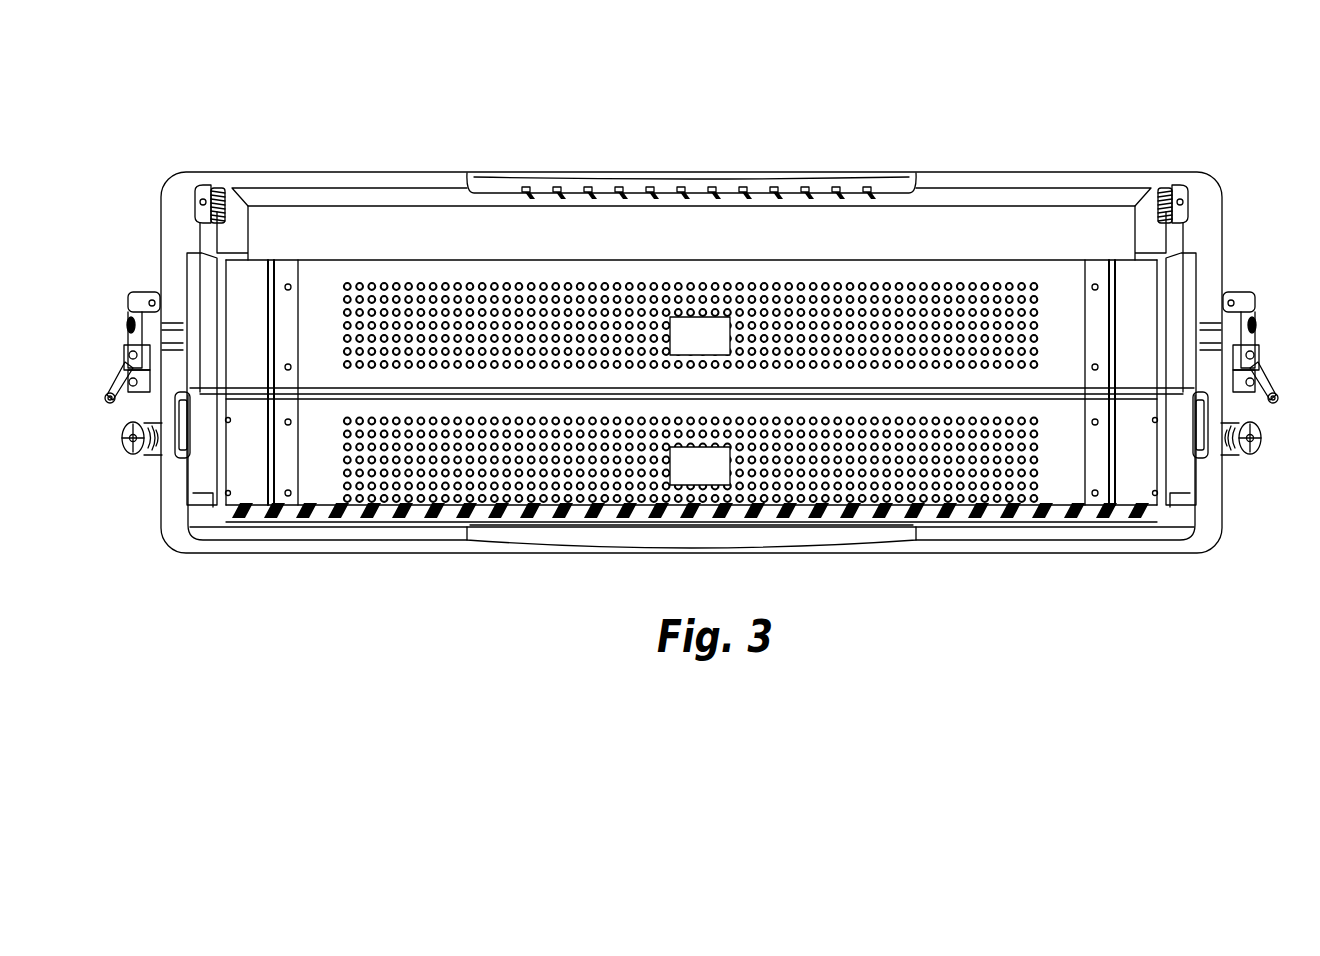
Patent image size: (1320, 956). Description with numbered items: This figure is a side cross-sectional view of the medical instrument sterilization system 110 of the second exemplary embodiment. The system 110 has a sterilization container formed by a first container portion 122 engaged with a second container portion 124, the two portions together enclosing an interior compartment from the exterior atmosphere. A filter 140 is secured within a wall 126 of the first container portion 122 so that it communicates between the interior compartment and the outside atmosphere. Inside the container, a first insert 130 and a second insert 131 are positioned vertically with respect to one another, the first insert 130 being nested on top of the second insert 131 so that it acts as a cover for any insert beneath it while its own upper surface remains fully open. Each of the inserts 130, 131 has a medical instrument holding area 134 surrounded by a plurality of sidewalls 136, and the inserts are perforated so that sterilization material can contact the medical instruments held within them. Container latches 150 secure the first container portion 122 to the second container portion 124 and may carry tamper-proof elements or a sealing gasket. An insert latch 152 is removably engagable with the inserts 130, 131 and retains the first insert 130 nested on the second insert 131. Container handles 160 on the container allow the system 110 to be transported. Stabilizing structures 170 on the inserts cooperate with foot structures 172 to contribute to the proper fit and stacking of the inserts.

The medical instrument sterilization system 110 is at (977, 87).
The first container portion 122 is at (177, 192).
The second container portion 124 is at (178, 532).
The wall 126 is at (1047, 172).
The first insert 130 is at (684, 347).
The second insert 131 is at (684, 477).
The medical instrument holding area 134 is at (335, 378).
The sidewalls 136 is at (200, 290).
The filter 140 is at (745, 187).
The container latch 150 is at (113, 404).
The insert latch 152 is at (177, 460).
The container handle 160 is at (138, 457).
The stabilizing structure 170 is at (212, 193).
The foot structure 172 is at (1128, 532).